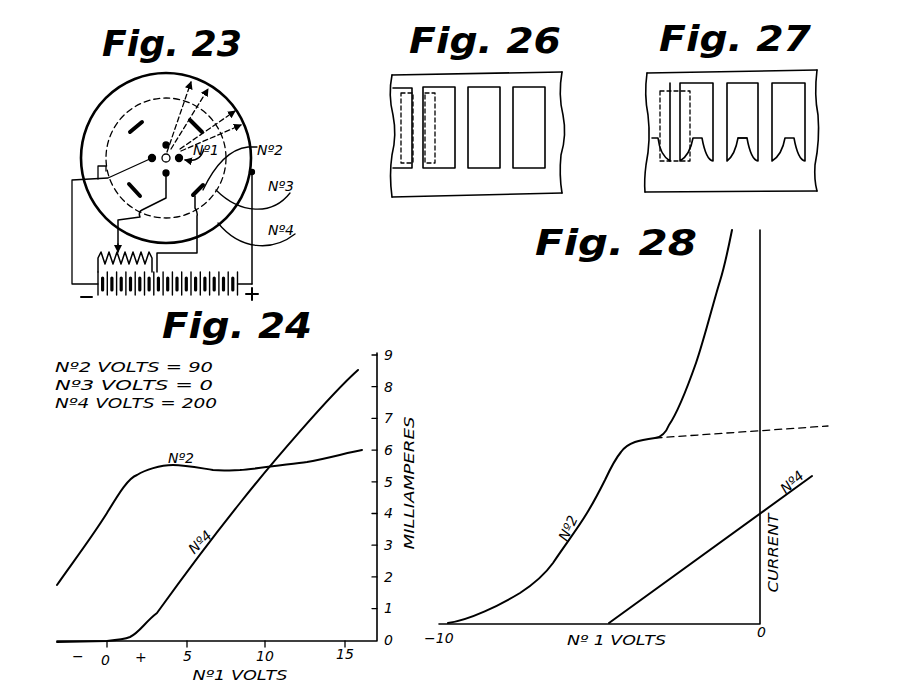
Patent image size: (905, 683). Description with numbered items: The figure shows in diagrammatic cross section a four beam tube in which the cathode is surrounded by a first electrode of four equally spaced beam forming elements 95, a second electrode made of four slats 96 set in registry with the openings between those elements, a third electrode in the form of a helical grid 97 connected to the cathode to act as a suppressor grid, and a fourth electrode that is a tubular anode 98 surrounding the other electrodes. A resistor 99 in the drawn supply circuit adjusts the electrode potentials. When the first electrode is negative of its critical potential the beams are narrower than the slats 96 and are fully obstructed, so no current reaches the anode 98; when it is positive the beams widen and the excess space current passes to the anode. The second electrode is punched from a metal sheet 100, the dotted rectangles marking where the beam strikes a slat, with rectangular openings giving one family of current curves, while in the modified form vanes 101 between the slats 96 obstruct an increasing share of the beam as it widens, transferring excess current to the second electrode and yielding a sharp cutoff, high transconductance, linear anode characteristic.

In FIG. 23, the beam forming elements 95 is at (152, 158).
In FIG. 23, the slats 96 is at (128, 123).
In FIG. 26, the slats 96 is at (510, 138).
In FIG. 27, the slats 96 is at (720, 98).
In FIG. 23, the helical grid 97 is at (105, 157).
In FIG. 23, the tubular anode 98 is at (227, 102).
In FIG. 23, the adjustable resistor 99 is at (114, 248).
In FIG. 26, the metal sheet 100 is at (503, 192).
In FIG. 27, the vanes 101 is at (745, 138).